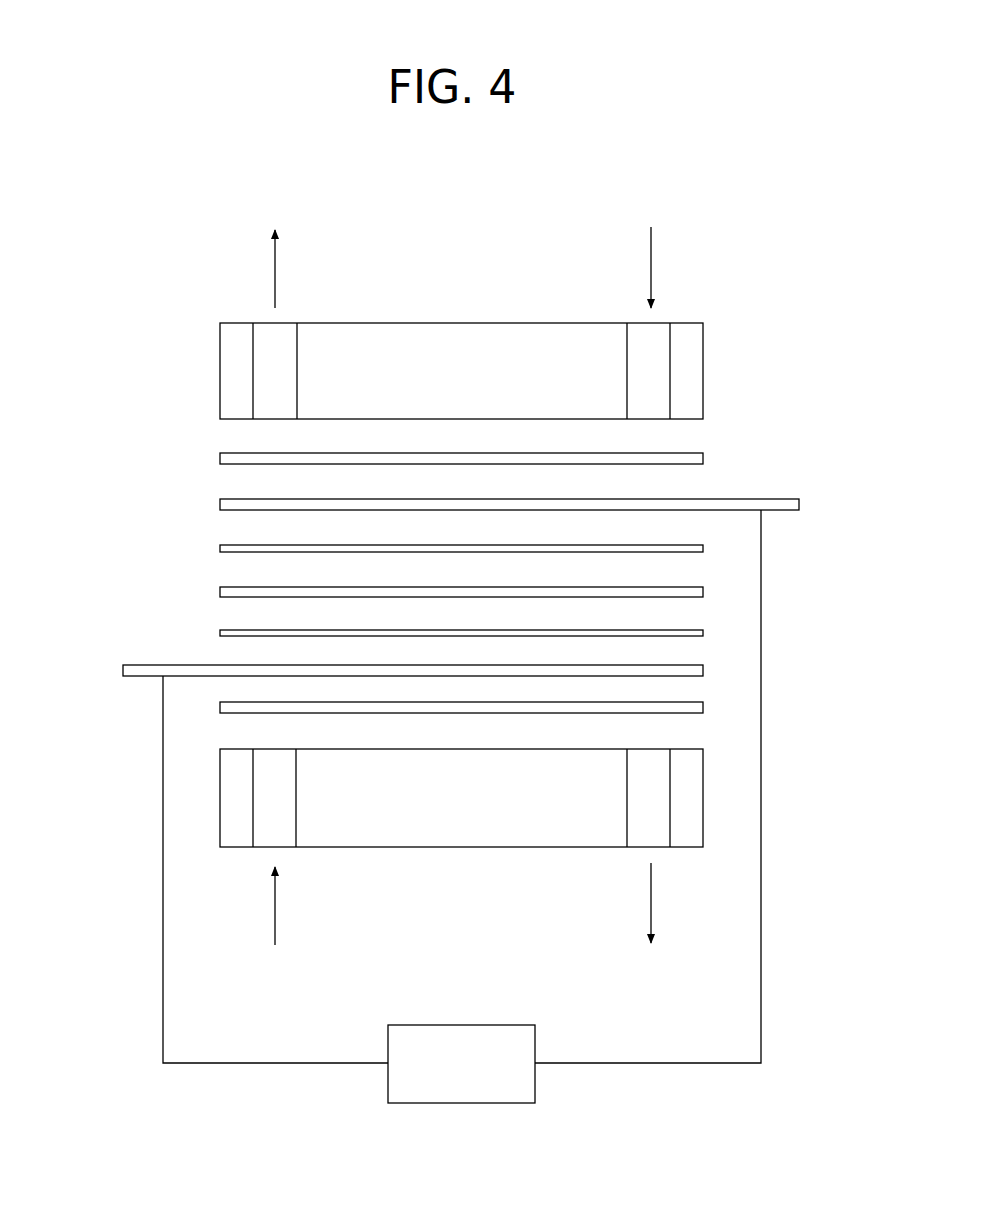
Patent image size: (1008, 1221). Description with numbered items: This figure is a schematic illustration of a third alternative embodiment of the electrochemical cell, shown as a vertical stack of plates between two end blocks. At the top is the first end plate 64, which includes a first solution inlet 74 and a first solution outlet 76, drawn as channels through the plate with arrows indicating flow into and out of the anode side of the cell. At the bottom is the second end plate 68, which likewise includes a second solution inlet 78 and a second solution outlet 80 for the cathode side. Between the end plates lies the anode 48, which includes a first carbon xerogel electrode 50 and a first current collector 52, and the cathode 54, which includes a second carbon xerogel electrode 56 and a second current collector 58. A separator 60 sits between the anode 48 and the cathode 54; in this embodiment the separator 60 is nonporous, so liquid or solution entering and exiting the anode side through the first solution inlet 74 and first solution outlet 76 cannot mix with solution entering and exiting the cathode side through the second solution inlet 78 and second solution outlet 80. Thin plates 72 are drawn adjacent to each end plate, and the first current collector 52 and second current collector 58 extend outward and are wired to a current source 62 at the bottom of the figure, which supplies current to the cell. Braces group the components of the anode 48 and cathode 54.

The anode 48 is at (848, 449).
The first carbon xerogel electrode 50 is at (695, 552).
The first current collector 52 is at (787, 499).
The cathode 54 is at (73, 580).
The second carbon xerogel electrode 56 is at (233, 630).
The second current collector 58 is at (140, 676).
The separator 60 is at (700, 592).
The current source 62 is at (474, 1103).
The first end plate 64 is at (478, 348).
The second end plate 68 is at (437, 825).
The insulating plate 72 is at (220, 459).
The first solution inlet 74 is at (277, 340).
The first solution outlet 76 is at (651, 340).
The second solution inlet 78 is at (267, 826).
The second solution outlet 80 is at (655, 825).